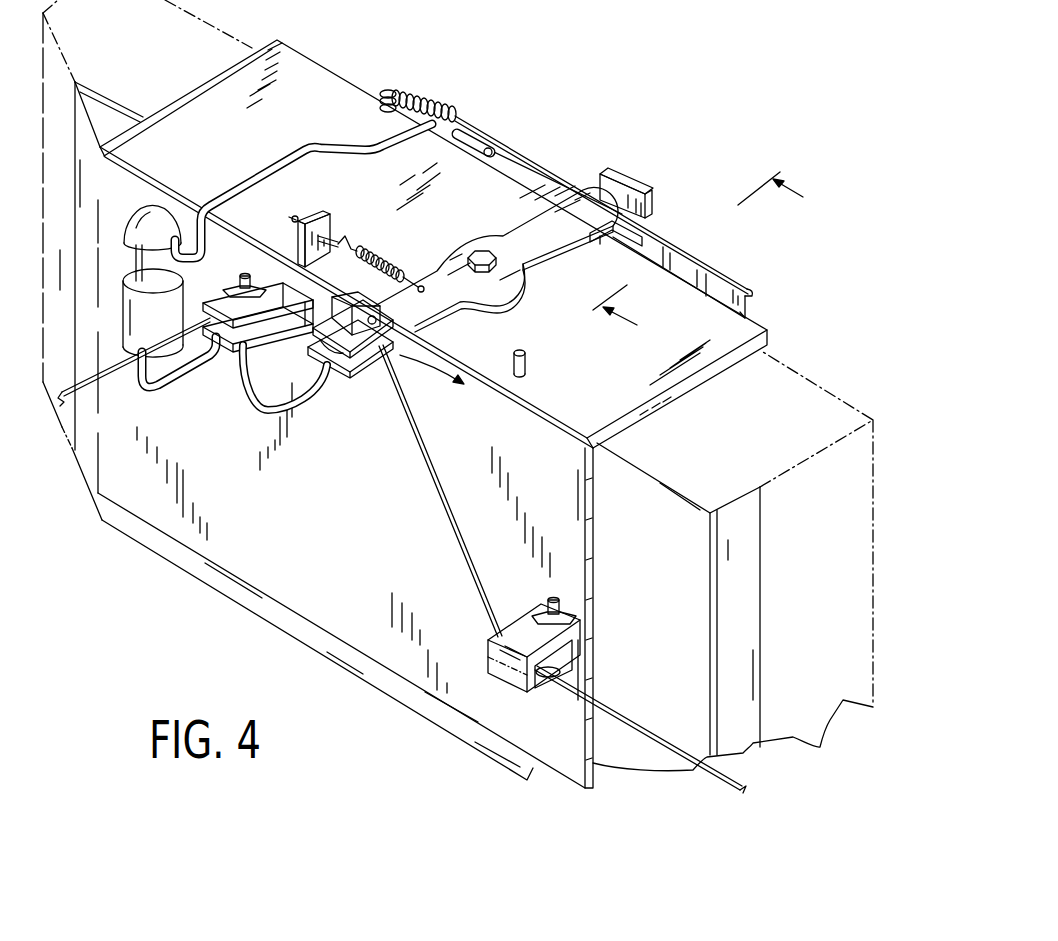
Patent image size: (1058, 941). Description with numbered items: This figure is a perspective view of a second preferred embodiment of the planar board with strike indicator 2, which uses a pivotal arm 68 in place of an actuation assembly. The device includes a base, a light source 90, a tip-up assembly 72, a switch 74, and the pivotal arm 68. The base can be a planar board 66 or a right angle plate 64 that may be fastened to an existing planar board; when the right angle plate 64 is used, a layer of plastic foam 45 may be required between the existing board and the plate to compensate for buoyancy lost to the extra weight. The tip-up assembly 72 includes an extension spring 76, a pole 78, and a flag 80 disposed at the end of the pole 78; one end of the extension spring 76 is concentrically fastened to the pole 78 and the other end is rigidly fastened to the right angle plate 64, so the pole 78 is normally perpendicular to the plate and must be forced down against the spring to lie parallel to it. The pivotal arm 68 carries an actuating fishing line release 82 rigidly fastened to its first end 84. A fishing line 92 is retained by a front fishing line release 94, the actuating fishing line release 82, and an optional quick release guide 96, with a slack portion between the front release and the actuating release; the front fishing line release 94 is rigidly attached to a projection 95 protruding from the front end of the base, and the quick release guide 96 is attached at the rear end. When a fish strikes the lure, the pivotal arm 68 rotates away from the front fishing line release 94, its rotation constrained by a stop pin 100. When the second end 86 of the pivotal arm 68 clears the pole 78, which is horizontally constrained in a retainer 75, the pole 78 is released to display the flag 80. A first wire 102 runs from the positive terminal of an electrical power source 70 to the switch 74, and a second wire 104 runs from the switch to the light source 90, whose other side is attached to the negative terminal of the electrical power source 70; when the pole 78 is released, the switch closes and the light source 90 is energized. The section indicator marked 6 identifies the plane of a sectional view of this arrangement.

The planar board with strike indicator 2 is at (205, 633).
The section line 6- 6 is at (706, 260).
The layer of plastic foam 45 is at (420, 705).
The right angle plate 64 is at (767, 332).
The planar board 66 is at (830, 368).
The pivotal arm 68 is at (527, 232).
The electrical power source 70 is at (170, 326).
The tip-up assembly 72 is at (497, 135).
The switch 74 is at (462, 140).
The retainer 75 is at (600, 178).
The extension spring 76 is at (397, 88).
The pole 78 is at (667, 222).
The flag 80 is at (750, 312).
The actuating fishing line release 82 is at (357, 385).
The first end of the pivotal arm 84 is at (387, 358).
The second end of the pivotal arm 86 is at (607, 205).
The light source 90 is at (160, 215).
The fishing line 92 is at (660, 735).
The front fishing line release 94 is at (232, 348).
The projection 95 is at (285, 285).
The quick release guide 96 is at (503, 690).
The stop pin 100 is at (518, 363).
The first wire 102 is at (158, 388).
The second wire 104 is at (338, 143).